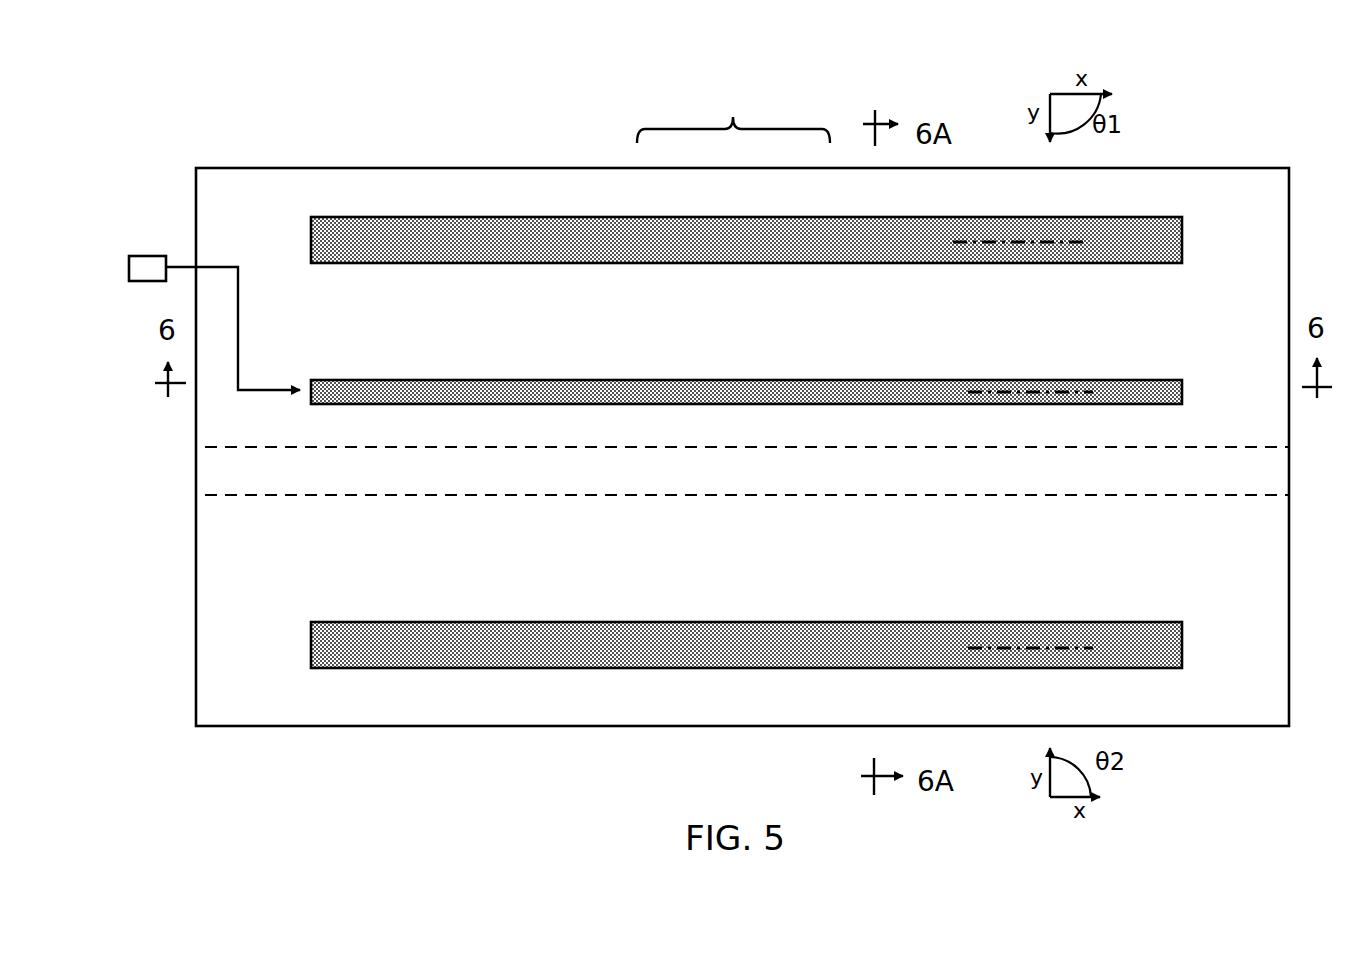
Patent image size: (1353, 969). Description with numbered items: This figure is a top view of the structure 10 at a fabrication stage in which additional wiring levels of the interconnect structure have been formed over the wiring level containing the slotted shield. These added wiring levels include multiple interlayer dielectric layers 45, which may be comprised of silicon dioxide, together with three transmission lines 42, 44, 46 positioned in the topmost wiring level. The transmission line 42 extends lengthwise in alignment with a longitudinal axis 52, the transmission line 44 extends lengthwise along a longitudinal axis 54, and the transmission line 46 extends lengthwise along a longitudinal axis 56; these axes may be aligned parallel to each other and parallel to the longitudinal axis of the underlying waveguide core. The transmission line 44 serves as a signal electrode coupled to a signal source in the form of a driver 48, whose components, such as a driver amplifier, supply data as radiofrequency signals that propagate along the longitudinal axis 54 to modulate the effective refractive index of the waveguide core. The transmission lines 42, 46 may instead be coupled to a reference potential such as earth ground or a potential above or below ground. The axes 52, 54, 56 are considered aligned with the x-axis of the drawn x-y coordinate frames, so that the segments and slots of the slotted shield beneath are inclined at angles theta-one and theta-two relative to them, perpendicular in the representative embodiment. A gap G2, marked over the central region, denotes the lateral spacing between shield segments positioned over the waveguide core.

The structure 10 is at (303, 148).
The transmission line 42 is at (450, 245).
The transmission line 44 is at (557, 390).
The transmission line 46 is at (456, 652).
The driver 48 is at (148, 266).
The longitudinal axis 52 is at (1057, 243).
The longitudinal axis 54 is at (1062, 392).
The longitudinal axis 56 is at (1043, 648).
The interlayer dielectric layer 45 is at (1254, 706).
The gap G2 is at (733, 115).